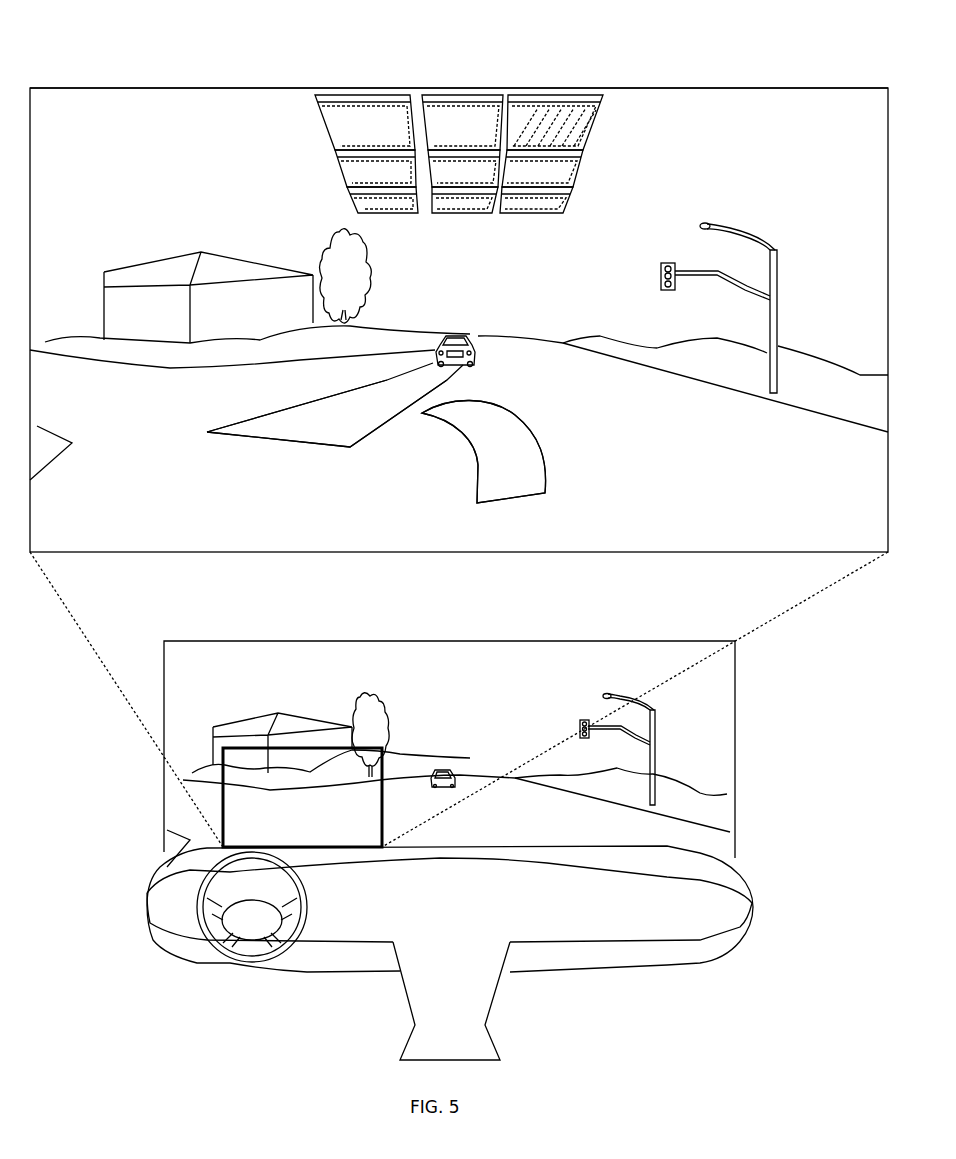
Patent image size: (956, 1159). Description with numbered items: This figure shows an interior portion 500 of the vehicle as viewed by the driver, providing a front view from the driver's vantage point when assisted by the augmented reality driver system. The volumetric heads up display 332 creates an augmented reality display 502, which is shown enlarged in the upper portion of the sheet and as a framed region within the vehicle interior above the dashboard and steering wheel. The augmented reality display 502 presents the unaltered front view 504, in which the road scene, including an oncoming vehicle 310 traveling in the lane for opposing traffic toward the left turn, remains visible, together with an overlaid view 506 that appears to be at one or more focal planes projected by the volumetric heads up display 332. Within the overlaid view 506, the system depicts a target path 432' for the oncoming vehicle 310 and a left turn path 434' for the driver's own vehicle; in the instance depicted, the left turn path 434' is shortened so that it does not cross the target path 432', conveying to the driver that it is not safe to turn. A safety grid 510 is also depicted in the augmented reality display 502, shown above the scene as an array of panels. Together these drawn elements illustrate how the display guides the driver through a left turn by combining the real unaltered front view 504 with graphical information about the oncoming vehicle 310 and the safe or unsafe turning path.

The interior portion 500 is at (753, 731).
The augmented reality display 502 is at (738, 39).
The volumetric heads up display 332 is at (822, 89).
The unaltered front view 504 is at (112, 134).
The safety grid 510 is at (583, 165).
The oncoming vehicle 310 is at (477, 345).
The overlaid view 506 is at (508, 379).
The target path 432' is at (336, 427).
The left turn path 434' is at (539, 451).